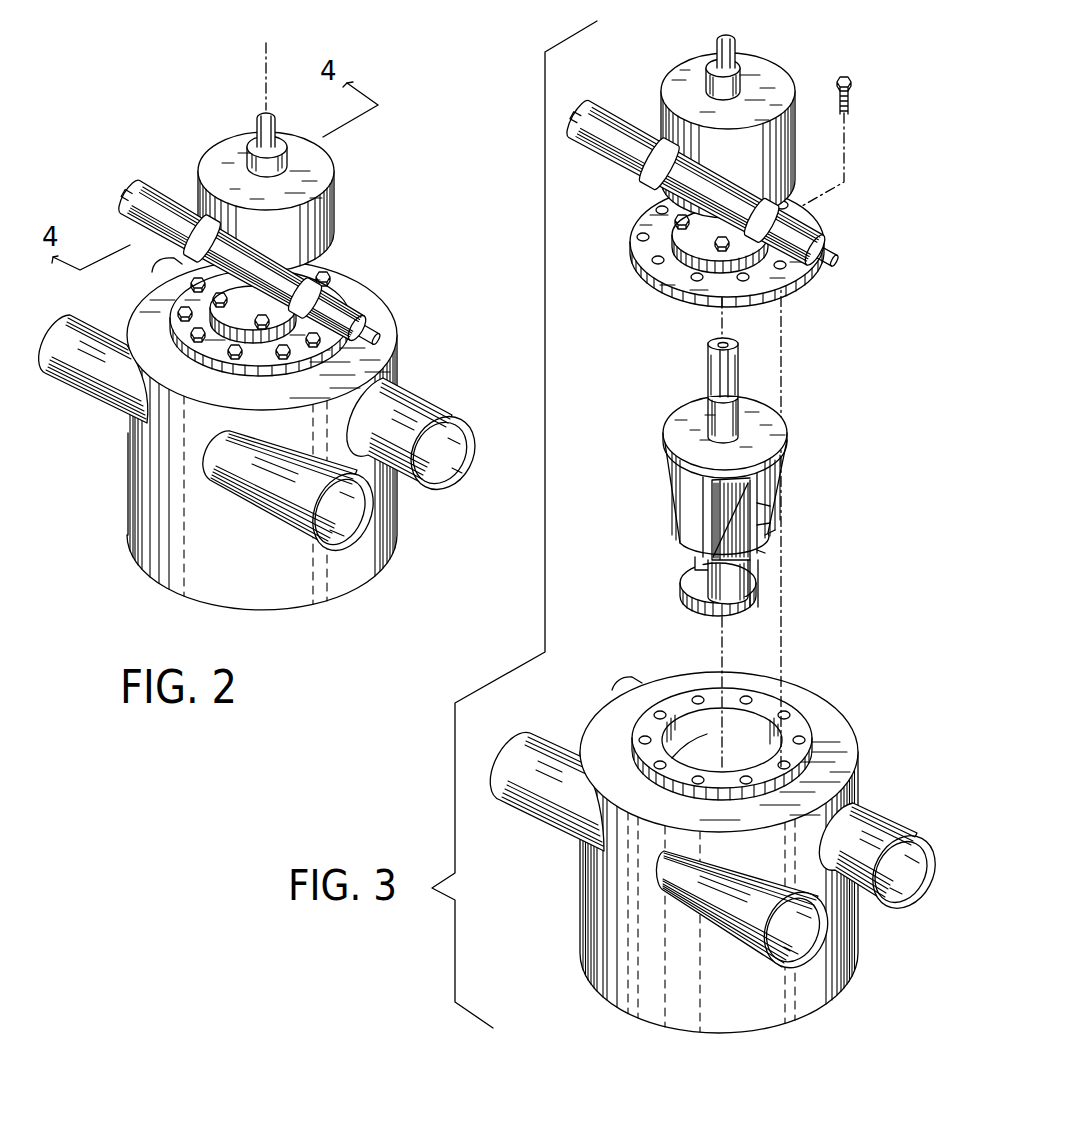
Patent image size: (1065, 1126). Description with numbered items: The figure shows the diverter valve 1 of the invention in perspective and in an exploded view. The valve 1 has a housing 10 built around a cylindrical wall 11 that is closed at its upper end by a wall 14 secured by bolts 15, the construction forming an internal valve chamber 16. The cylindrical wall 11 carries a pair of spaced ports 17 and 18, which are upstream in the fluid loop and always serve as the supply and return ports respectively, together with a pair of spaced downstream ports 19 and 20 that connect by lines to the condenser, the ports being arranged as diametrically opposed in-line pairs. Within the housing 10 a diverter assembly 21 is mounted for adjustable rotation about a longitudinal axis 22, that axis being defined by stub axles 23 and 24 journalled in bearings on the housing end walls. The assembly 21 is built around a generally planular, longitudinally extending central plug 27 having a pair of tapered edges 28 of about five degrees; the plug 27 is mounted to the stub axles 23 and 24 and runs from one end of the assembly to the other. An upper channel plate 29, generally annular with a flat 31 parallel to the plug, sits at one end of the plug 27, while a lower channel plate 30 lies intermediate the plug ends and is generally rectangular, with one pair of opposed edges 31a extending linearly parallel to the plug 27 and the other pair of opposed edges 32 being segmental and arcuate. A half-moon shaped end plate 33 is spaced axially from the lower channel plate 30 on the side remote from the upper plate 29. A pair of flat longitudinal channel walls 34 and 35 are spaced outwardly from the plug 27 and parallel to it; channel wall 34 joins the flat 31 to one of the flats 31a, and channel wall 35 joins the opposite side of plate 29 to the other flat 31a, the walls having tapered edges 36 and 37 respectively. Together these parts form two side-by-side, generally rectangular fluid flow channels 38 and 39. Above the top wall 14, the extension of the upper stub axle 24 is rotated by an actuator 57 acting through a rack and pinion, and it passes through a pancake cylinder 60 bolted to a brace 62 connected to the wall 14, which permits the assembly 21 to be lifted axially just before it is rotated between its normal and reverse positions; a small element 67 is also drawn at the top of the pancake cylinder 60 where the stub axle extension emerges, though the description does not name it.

In FIG. 2, the valve 1 is at (271, 332).
In FIG. 3, the valve 1 is at (715, 516).
In FIG. 2, the housing 10 is at (271, 439).
In FIG. 3, the housing 10 is at (715, 830).
In FIG. 2, the cylindrical wall 11 is at (315, 587).
In FIG. 3, the cylindrical wall 11 is at (620, 945).
In FIG. 2, the wall 14 is at (383, 315).
In FIG. 3, the wall 14 is at (600, 727).
In FIG. 2, the bolts 15 is at (277, 363).
In FIG. 3, the bolts 15 is at (858, 70).
In FIG. 3, the internal valve chamber 16 is at (742, 747).
In FIG. 2, the port 17 is at (410, 468).
In FIG. 3, the port 17 is at (908, 838).
In FIG. 2, the port 18 is at (362, 513).
In FIG. 3, the port 18 is at (790, 945).
In FIG. 2, the downstream port 19 is at (137, 270).
In FIG. 3, the downstream port 19 is at (622, 679).
In FIG. 2, the downstream port 20 is at (89, 395).
In FIG. 3, the downstream port 20 is at (535, 822).
In FIG. 3, the diverter assembly 21 is at (722, 482).
In FIG. 2, the longitudinal axis 22 is at (265, 62).
In FIG. 3, the longitudinal axis 22 is at (722, 328).
In FIG. 3, the stub axle 23 is at (712, 580).
In FIG. 2, the stub axle 24 is at (257, 122).
In FIG. 3, the stub axle 24 is at (735, 38).
In FIG. 3, the central plug 27 is at (749, 460).
In FIG. 3, the tapered edges 28 is at (770, 523).
In FIG. 3, the upper channel plate 29 is at (677, 423).
In FIG. 3, the lower channel plate 30 is at (757, 557).
In FIG. 3, the flat 31 is at (767, 428).
In FIG. 3, the opposed edges 31a is at (687, 547).
In FIG. 3, the opposed edges 32 is at (763, 553).
In FIG. 3, the end plate 33 is at (690, 593).
In FIG. 3, the channel wall 34 is at (770, 480).
In FIG. 3, the channel wall 35 is at (668, 500).
In FIG. 3, the tapered edges 36 is at (775, 497).
In FIG. 3, the tapered edges 37 is at (705, 500).
In FIG. 3, the fluid flow channel 38 is at (760, 503).
In FIG. 3, the fluid flow channel 39 is at (728, 517).
In FIG. 2, the actuator 57 is at (145, 170).
In FIG. 3, the actuator 57 is at (618, 168).
In FIG. 2, the pancake cylinder 60 is at (340, 203).
In FIG. 3, the pancake cylinder 60 is at (673, 65).
In FIG. 2, the brace 62 is at (310, 260).
In FIG. 3, the brace 62 is at (702, 232).
In FIG. 2, the stem boss 67 is at (295, 143).
In FIG. 3, the stem boss 67 is at (748, 66).